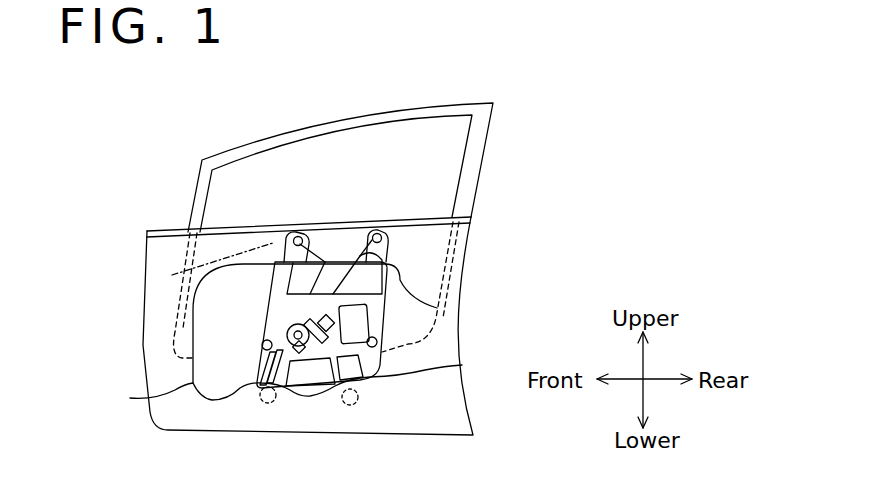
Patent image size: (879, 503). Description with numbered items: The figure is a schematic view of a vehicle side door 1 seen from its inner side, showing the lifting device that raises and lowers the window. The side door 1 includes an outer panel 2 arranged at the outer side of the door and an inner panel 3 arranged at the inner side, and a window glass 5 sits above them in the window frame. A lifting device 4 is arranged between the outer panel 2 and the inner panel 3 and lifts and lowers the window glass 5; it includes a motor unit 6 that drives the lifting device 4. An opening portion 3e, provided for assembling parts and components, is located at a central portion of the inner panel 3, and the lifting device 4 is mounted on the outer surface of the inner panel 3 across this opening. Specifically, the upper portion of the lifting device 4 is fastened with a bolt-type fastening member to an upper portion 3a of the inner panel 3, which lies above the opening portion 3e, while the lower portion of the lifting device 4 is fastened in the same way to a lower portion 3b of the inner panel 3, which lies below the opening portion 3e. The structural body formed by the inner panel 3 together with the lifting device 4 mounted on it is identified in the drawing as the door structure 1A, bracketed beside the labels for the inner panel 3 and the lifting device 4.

The side door 1 is at (543, 157).
The door structure 1A is at (500, 293).
The outer panel 2 is at (482, 178).
The inner panel 3 is at (448, 328).
The upper portion 3a is at (331, 242).
The lower portion 3b is at (302, 425).
The opening portion 3e is at (150, 397).
The lifting device 4 is at (437, 308).
The window glass 5 is at (168, 333).
The motor unit 6 is at (290, 330).